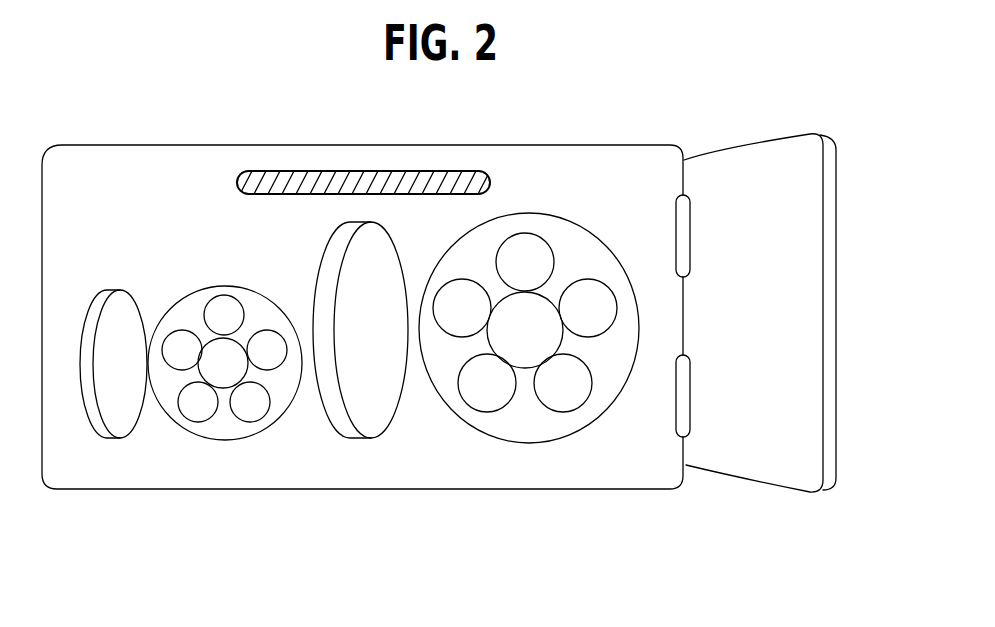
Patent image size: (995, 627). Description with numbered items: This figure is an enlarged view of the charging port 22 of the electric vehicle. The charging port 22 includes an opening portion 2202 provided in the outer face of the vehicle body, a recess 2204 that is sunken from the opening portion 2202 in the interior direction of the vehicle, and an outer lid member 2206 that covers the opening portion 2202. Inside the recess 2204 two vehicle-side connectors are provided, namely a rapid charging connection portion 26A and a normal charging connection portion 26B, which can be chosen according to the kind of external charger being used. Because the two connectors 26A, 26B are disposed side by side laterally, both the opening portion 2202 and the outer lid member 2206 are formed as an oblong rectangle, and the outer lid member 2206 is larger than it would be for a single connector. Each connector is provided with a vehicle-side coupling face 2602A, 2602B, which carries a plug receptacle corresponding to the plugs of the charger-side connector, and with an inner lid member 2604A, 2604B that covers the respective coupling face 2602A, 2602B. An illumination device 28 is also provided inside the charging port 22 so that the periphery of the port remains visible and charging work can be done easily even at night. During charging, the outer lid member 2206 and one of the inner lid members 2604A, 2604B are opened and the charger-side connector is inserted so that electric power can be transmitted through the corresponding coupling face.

The charging port 22 is at (640, 112).
The opening portion 2202 is at (134, 145).
The recess 2204 is at (193, 182).
The outer lid member 2206 is at (767, 407).
The illumination device 28 is at (392, 172).
The rapid charging connection portion 26A is at (611, 430).
The normal charging connection portion 26B is at (203, 455).
The vehicle-side coupling face 2602A is at (530, 443).
The vehicle-side coupling face 2602B is at (248, 432).
The inner lid member 2604A is at (372, 438).
The inner lid member 2604B is at (95, 438).